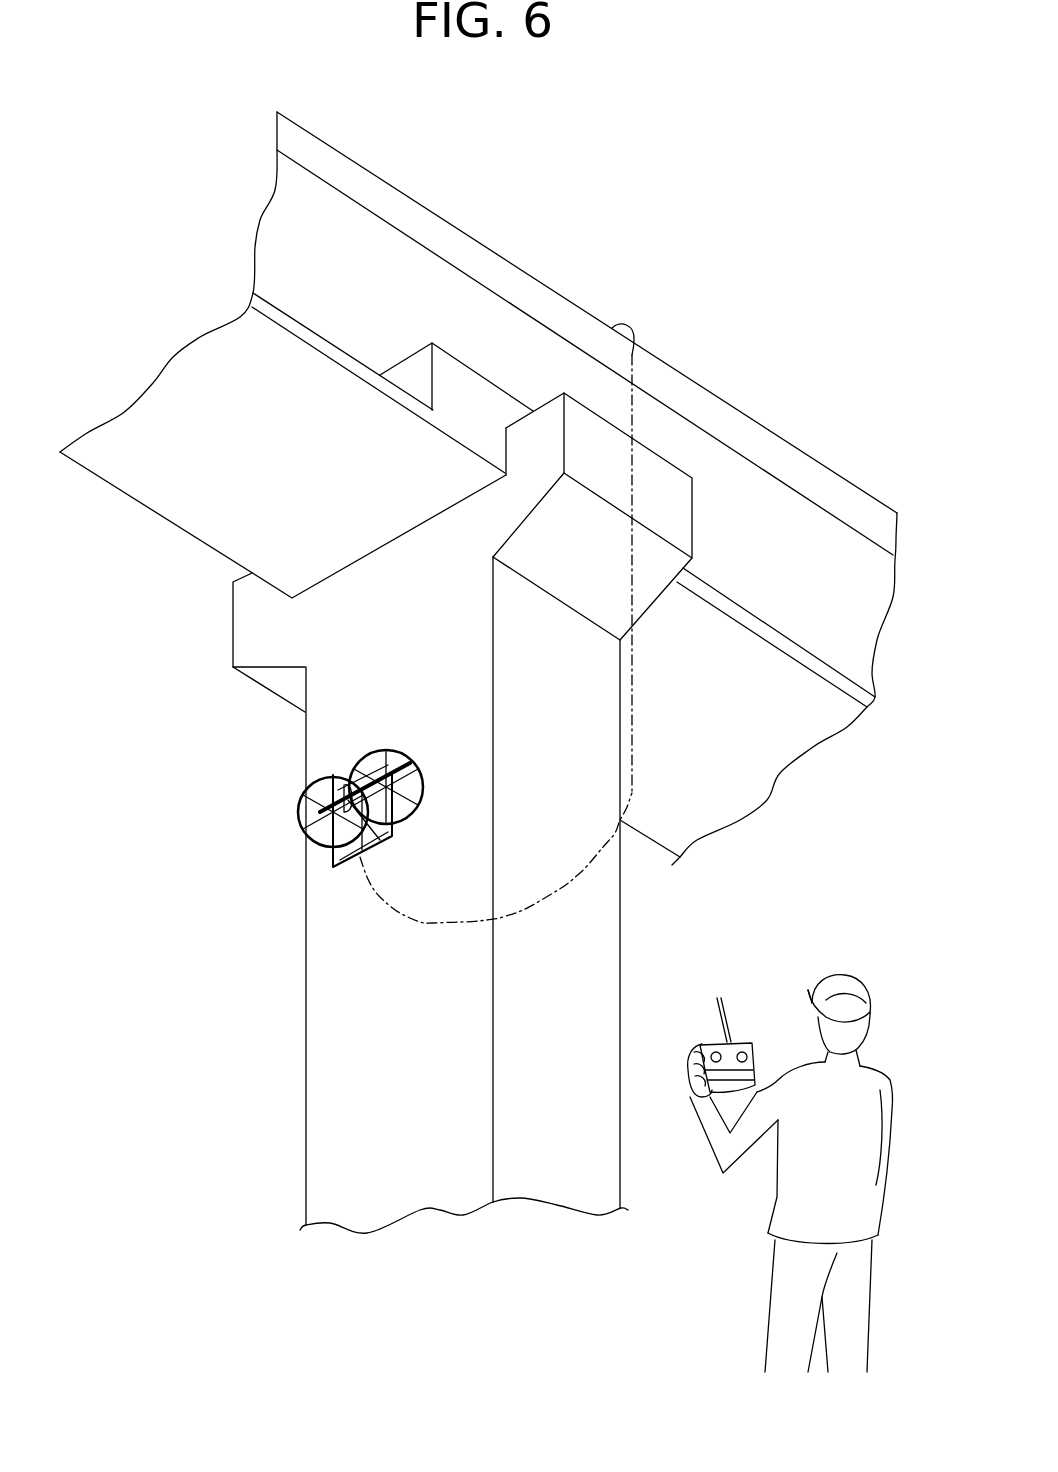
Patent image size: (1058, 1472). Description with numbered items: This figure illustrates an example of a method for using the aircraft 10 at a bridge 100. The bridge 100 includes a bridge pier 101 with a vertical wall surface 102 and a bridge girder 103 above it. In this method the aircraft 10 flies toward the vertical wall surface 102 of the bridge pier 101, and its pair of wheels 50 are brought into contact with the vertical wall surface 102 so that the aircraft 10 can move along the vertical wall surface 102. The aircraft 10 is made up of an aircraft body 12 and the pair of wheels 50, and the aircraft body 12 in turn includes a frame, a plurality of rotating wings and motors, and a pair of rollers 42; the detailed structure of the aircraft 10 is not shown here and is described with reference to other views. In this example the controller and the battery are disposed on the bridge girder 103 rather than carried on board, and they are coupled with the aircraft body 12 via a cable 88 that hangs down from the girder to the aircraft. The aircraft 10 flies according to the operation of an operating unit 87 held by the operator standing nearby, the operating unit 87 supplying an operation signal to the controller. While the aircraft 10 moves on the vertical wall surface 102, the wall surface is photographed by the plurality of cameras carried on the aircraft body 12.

The aircraft 10 is at (346, 799).
The aircraft body 12 is at (390, 840).
The rollers 42 is at (403, 755).
The wheels 50 is at (300, 818).
The operating unit 87 is at (730, 1037).
The cable 88 is at (633, 363).
The bridge 100 is at (478, 672).
The bridge pier 101 is at (415, 895).
The vertical wall surface 102 is at (322, 903).
The bridge girder 103 is at (574, 307).